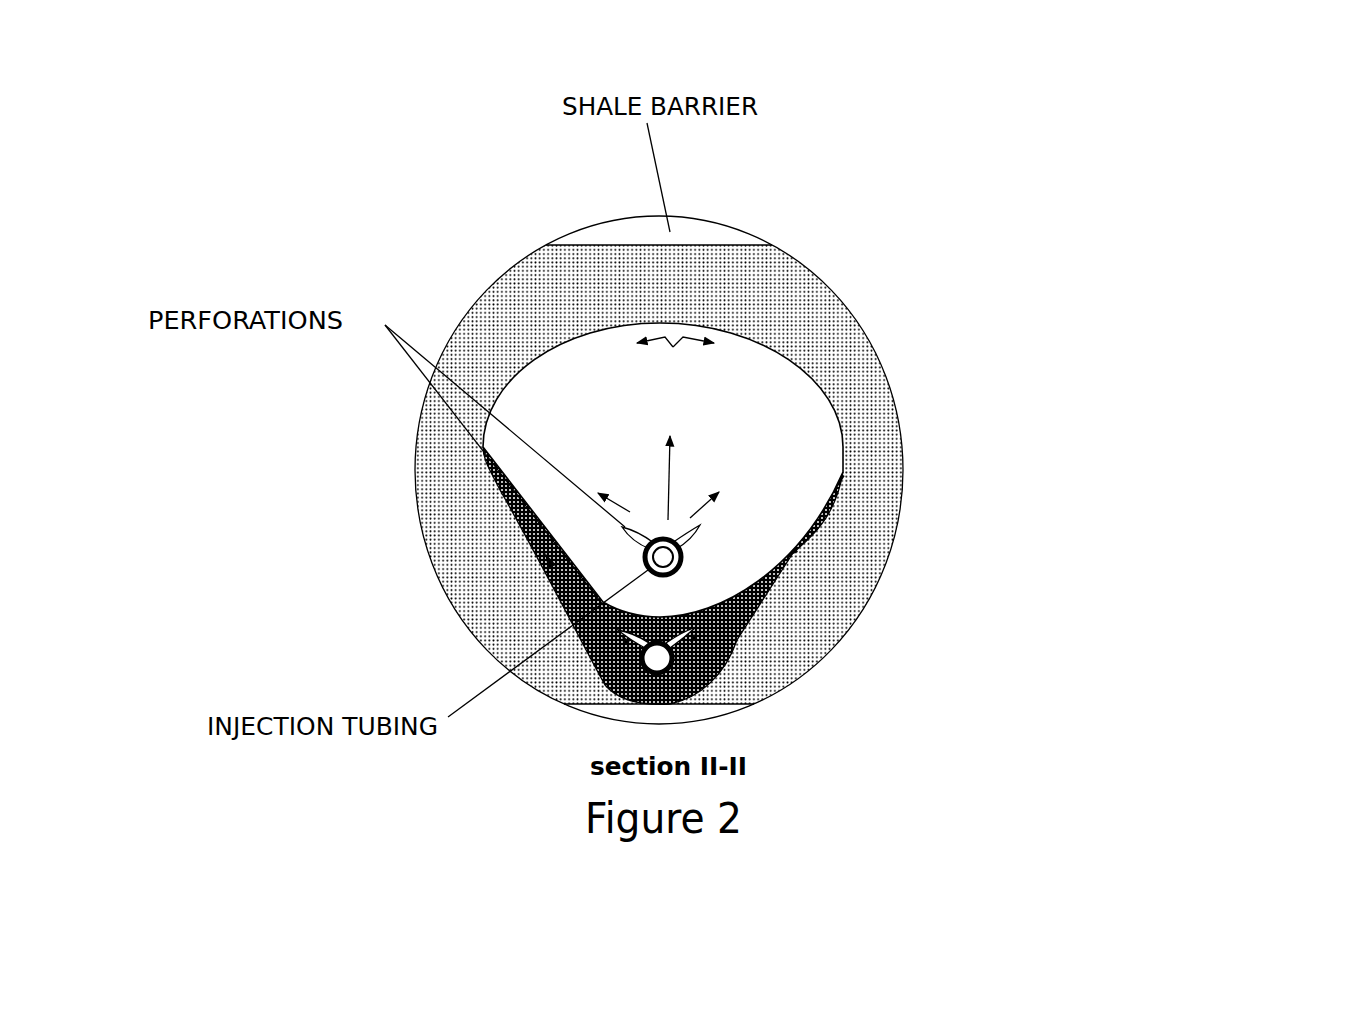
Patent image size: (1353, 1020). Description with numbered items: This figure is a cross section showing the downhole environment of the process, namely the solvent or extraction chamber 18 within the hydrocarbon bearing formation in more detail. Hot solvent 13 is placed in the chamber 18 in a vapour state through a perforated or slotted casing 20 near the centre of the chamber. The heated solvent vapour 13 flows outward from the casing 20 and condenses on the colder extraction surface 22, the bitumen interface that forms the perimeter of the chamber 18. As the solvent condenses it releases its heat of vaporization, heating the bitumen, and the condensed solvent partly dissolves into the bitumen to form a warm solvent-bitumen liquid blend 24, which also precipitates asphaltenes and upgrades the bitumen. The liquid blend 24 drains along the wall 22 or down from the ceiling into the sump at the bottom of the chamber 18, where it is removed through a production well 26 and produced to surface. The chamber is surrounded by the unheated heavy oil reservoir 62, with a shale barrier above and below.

The hot solvent vapour 13 is at (677, 428).
The solvent chamber 18 is at (587, 408).
The perforated casing 20 is at (945, 572).
The extraction surface 22 is at (815, 385).
The solvent-bitumen liquid blend 24 is at (793, 547).
The production well 26 is at (720, 680).
The unheated heavy oil reservoir 62 is at (507, 628).